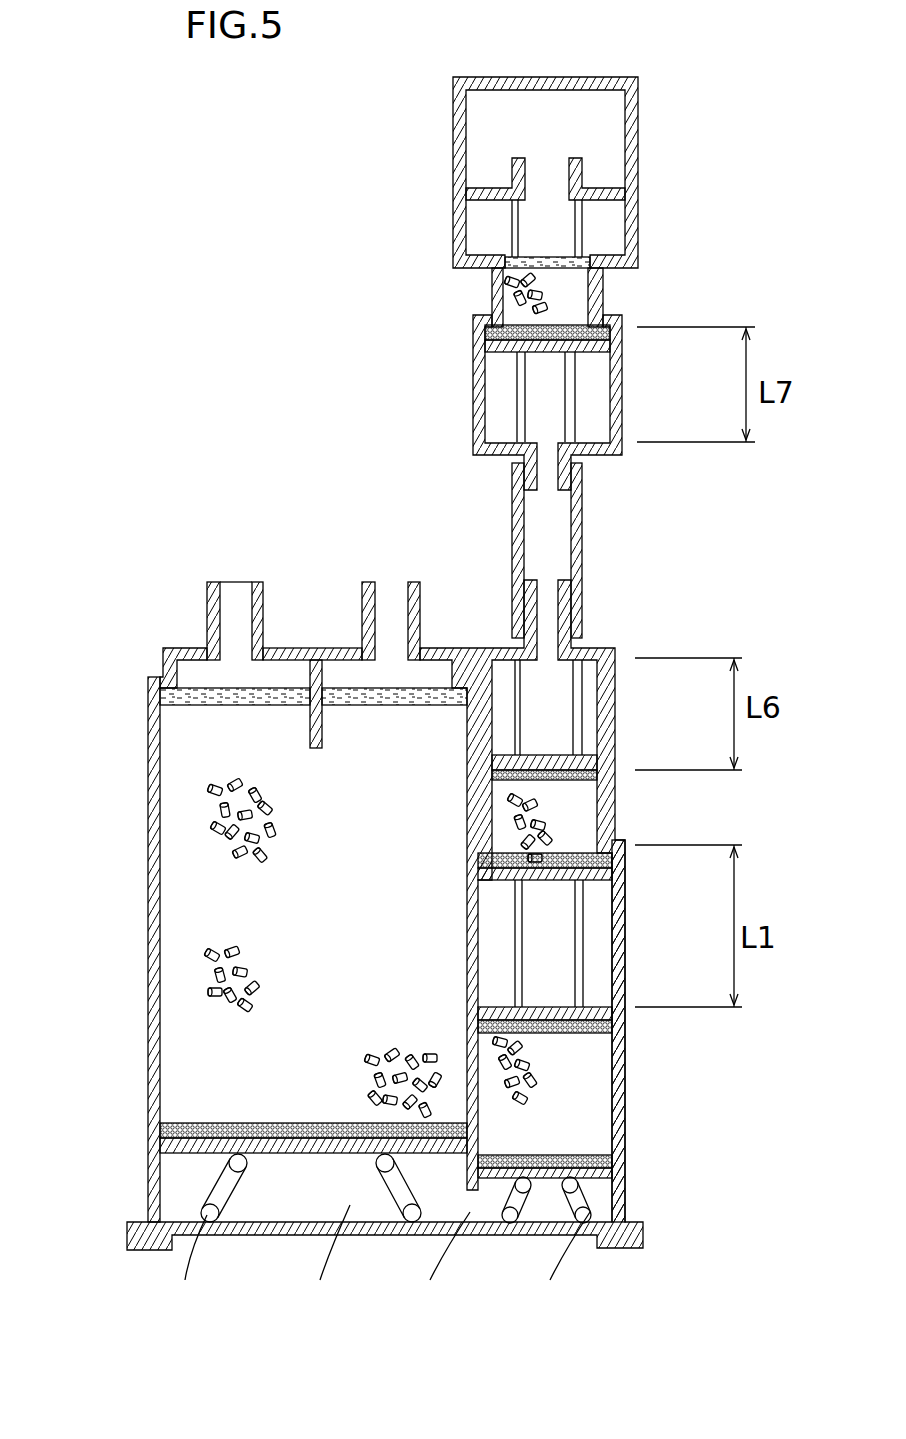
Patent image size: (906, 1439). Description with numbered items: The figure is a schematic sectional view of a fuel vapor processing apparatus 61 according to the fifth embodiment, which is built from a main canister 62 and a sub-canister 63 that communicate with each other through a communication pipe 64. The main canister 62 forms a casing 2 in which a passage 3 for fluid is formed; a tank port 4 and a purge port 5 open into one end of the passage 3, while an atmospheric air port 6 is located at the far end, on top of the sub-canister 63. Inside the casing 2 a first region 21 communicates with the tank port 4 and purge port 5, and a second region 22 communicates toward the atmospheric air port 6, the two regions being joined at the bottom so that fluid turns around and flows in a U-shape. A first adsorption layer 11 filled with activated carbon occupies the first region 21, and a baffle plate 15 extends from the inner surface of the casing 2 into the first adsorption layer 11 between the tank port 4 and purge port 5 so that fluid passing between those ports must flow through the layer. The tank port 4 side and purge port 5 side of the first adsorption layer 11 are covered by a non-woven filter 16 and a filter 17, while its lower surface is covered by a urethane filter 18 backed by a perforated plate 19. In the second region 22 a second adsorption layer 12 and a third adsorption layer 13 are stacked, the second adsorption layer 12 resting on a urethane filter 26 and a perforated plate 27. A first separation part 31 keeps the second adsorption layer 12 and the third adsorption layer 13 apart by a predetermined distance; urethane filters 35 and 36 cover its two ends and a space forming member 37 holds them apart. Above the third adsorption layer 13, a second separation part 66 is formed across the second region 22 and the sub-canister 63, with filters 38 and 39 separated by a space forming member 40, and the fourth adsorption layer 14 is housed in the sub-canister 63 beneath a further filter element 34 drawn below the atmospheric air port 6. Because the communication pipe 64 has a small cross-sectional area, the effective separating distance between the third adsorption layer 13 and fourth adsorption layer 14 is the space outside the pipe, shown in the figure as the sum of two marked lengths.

The casing 2 is at (152, 962).
The passage 3 is at (190, 905).
The tank port 4 is at (235, 600).
The purge port 5 is at (385, 595).
The atmospheric air port 6 is at (552, 175).
The first adsorption layer 11 is at (230, 755).
The second adsorption layer 12 is at (590, 1118).
The third adsorption layer 13 is at (578, 815).
The fourth adsorption layer 14 is at (570, 290).
The baffle plate 15 is at (318, 745).
The filter 16 is at (250, 705).
The filter 17 is at (398, 708).
The filter 18 is at (275, 1125).
The plate 19 is at (332, 1142).
The first region 21 is at (188, 1090).
The second region 22 is at (565, 890).
The filter 26 is at (612, 1160).
The plate 27 is at (612, 1180).
The first separation part 31 is at (598, 968).
The filter 34 is at (600, 262).
The filter 35 is at (500, 993).
The filter 36 is at (478, 860).
The space forming member 37 is at (583, 930).
The filter 38 is at (592, 768).
The filter 39 is at (485, 333).
The space forming member 40 is at (520, 418).
The fuel vapor processing apparatus 61 is at (228, 570).
The main canister 62 is at (140, 650).
The sub-canister 63 is at (492, 76).
The communication pipe 64 is at (578, 550).
The second separation part 66 is at (590, 387).